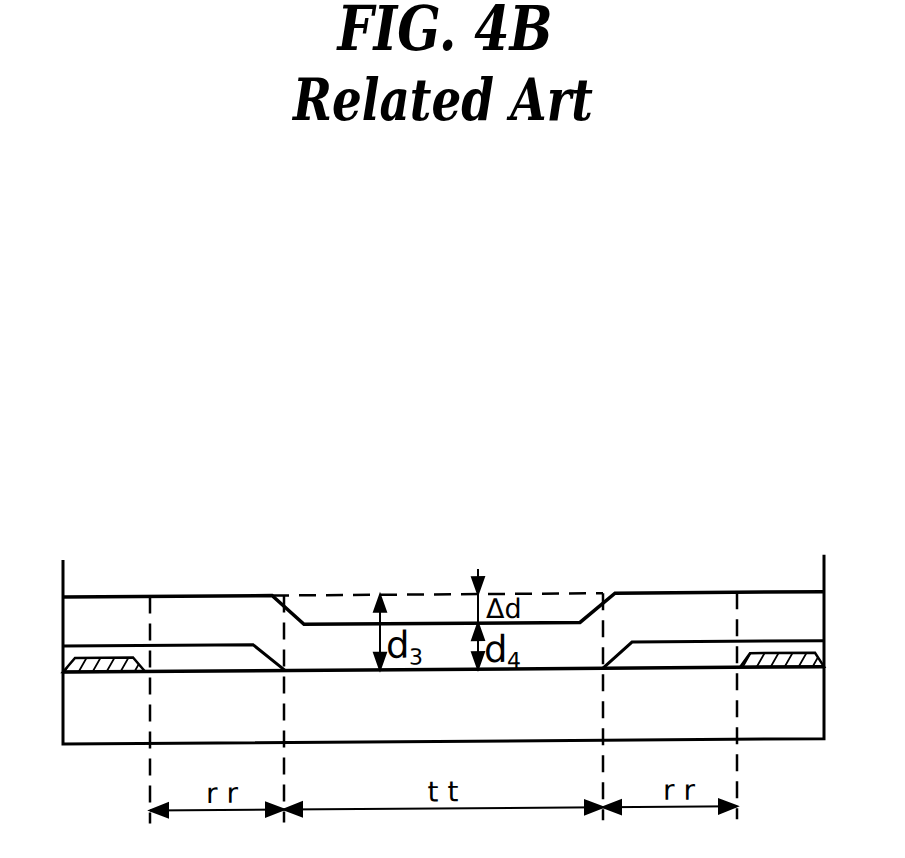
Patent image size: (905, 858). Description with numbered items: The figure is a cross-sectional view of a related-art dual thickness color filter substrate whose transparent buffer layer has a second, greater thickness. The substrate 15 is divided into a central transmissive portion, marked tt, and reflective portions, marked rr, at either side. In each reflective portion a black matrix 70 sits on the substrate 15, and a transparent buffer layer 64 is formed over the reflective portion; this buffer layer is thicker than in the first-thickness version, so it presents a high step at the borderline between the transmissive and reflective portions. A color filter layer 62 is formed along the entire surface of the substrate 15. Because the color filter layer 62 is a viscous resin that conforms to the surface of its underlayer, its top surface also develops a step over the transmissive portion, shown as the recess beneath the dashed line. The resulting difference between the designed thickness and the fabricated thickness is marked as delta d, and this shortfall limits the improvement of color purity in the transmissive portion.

The substrate 15 is at (466, 727).
The color filter layer 62 is at (630, 607).
The transparent buffer layer 64 is at (695, 655).
The black matrix 70 is at (769, 660).